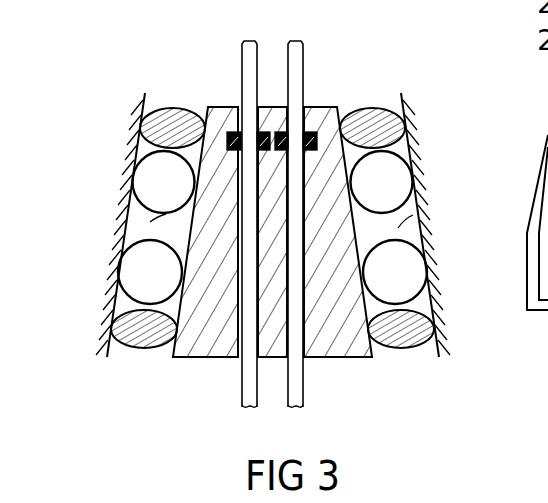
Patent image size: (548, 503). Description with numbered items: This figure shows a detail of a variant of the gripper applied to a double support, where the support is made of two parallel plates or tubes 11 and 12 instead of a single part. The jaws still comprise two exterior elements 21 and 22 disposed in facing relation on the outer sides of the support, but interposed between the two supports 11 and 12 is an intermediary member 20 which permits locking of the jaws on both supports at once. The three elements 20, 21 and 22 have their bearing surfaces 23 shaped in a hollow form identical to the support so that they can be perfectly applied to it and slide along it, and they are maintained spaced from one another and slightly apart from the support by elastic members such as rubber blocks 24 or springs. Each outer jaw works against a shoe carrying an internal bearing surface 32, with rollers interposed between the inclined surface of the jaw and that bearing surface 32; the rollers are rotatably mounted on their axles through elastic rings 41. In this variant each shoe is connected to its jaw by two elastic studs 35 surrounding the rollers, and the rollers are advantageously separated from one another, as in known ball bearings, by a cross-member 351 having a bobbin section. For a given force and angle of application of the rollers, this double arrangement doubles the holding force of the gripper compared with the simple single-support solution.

The parallel tube 11 is at (293, 62).
The parallel tube 12 is at (242, 53).
The intermediary member 20 is at (311, 202).
The jaw 21 is at (403, 98).
The jaw 22 is at (137, 139).
The bearing surface 23 is at (307, 213).
The rubber block 24 is at (207, 112).
The internal bearing surface 32 is at (421, 244).
The elastic stud 35 is at (110, 354).
The cross-member 351 is at (140, 230).
The elastic ring 41 is at (145, 182).